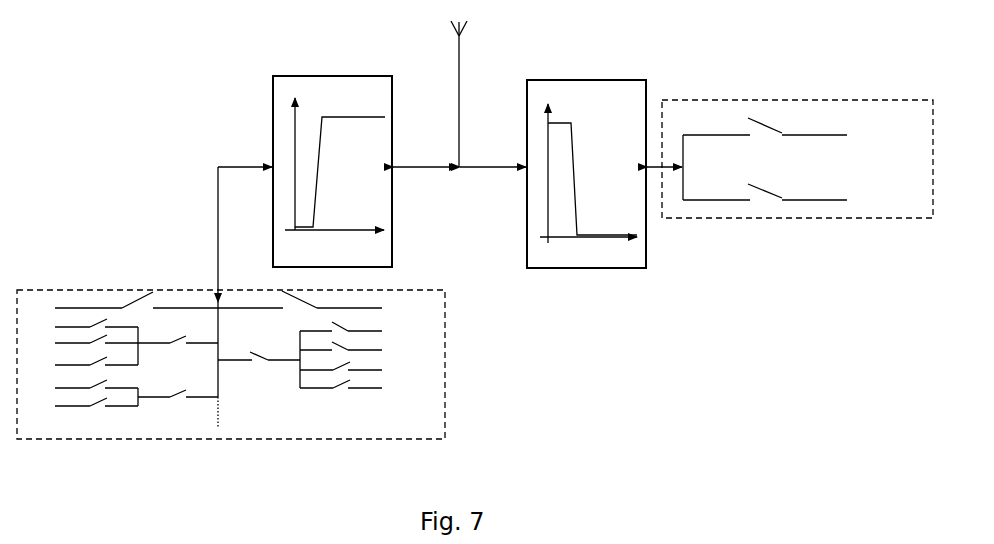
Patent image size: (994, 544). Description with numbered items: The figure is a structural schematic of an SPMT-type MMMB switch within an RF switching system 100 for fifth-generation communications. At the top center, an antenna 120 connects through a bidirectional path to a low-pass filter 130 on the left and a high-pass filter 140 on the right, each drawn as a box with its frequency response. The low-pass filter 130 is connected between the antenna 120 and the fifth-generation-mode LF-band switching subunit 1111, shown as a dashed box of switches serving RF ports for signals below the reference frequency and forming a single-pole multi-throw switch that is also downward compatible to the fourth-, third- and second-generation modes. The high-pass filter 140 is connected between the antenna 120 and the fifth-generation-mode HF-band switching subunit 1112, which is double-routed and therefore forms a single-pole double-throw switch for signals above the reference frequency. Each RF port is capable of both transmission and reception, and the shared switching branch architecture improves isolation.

The RF switching system 100 is at (92, 74).
The antenna 120 is at (460, 72).
The low-pass filter 130 is at (368, 88).
The high-pass filter 140 is at (540, 88).
The 5G-mode LF-band switching subunit 1111 is at (178, 292).
The 5G-mode HF-band switching subunit 1112 is at (788, 107).